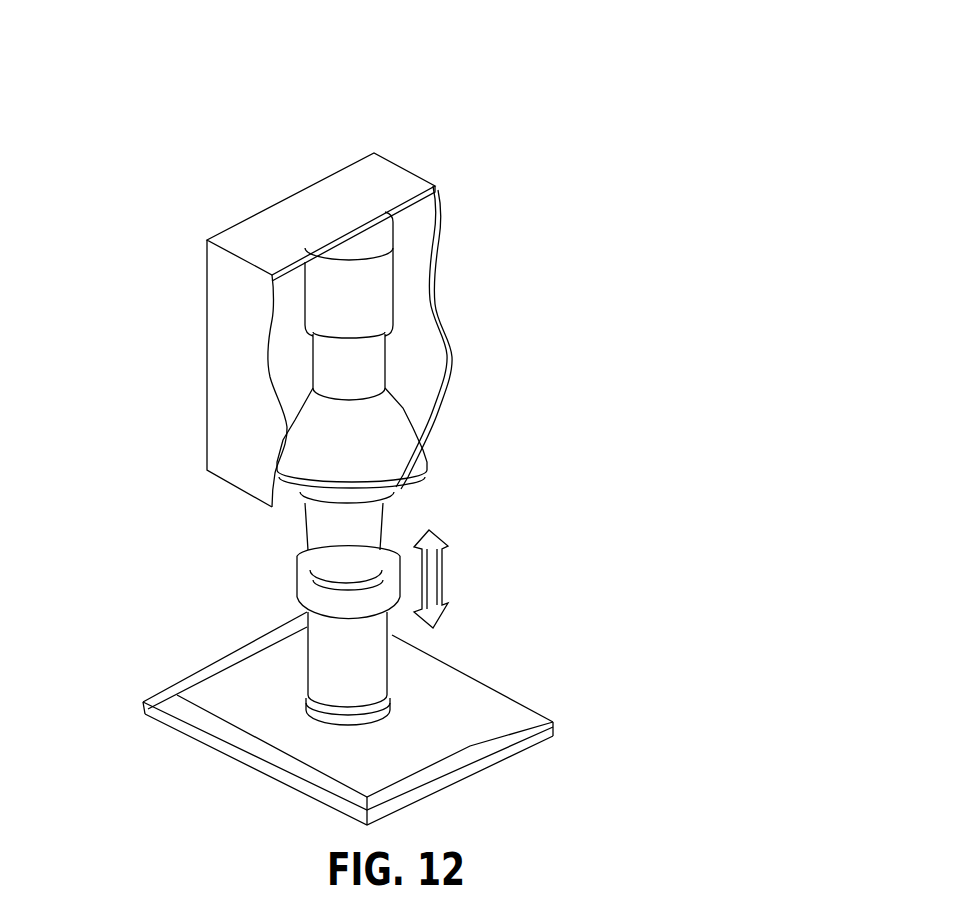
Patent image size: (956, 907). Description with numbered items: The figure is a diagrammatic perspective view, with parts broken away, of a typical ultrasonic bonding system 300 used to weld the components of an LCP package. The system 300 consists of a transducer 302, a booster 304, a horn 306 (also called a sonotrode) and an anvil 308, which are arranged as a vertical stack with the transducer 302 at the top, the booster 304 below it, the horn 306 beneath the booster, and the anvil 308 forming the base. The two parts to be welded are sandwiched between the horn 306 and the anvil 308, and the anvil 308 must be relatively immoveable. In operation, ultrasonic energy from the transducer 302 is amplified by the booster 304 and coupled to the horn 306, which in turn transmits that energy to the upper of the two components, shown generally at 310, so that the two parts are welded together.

The ultrasonic bonding system 300 is at (448, 158).
The transducer 302 is at (345, 283).
The booster 304 is at (375, 430).
The horn 306 is at (310, 652).
The anvil 308 is at (515, 745).
The upper component 310 is at (307, 700).